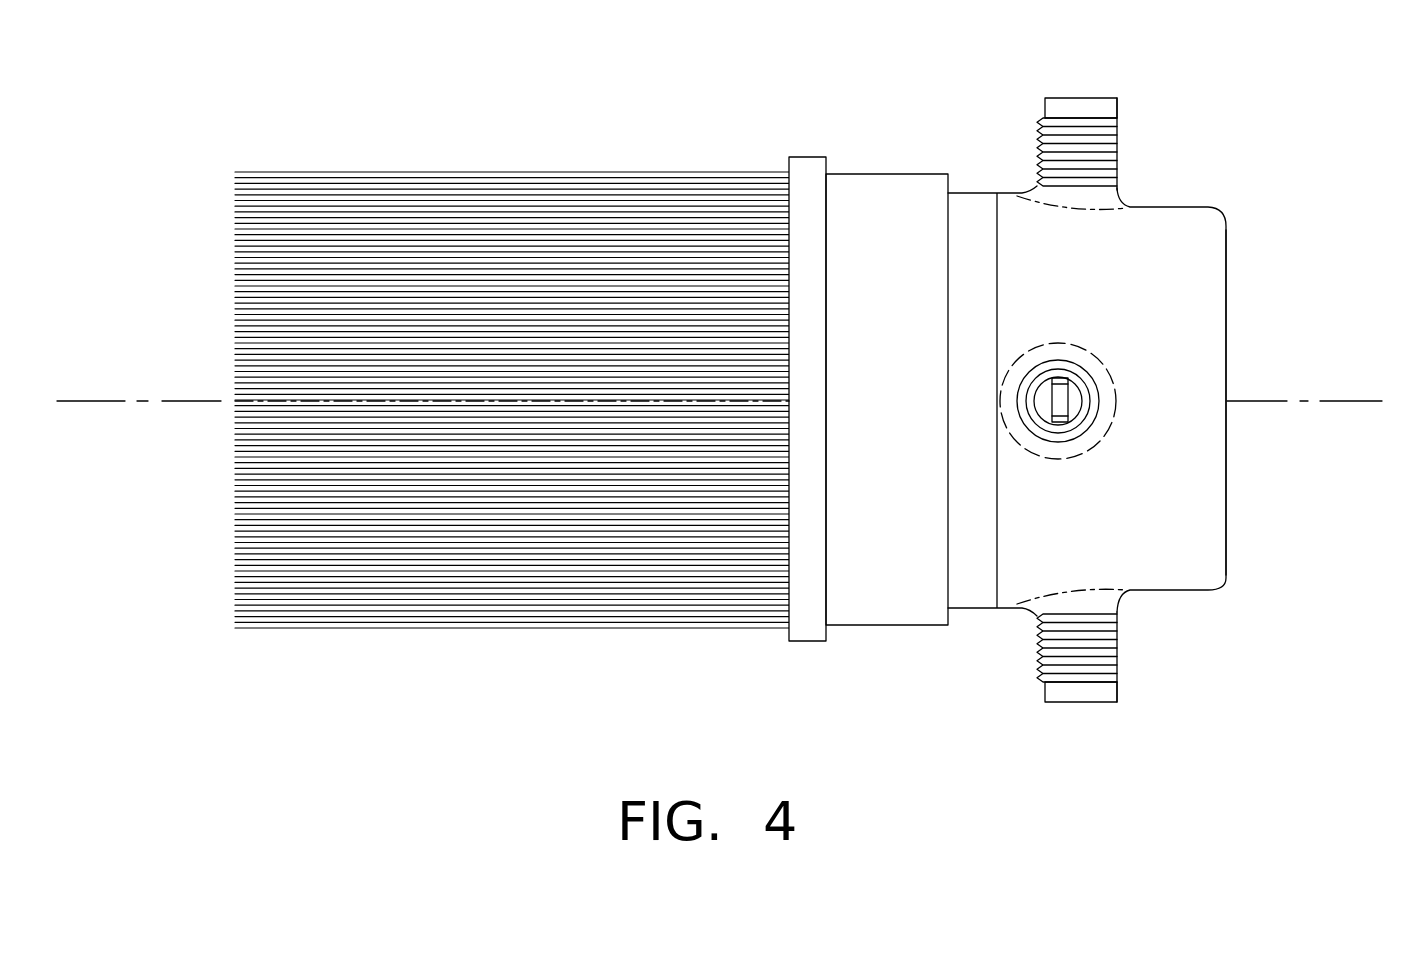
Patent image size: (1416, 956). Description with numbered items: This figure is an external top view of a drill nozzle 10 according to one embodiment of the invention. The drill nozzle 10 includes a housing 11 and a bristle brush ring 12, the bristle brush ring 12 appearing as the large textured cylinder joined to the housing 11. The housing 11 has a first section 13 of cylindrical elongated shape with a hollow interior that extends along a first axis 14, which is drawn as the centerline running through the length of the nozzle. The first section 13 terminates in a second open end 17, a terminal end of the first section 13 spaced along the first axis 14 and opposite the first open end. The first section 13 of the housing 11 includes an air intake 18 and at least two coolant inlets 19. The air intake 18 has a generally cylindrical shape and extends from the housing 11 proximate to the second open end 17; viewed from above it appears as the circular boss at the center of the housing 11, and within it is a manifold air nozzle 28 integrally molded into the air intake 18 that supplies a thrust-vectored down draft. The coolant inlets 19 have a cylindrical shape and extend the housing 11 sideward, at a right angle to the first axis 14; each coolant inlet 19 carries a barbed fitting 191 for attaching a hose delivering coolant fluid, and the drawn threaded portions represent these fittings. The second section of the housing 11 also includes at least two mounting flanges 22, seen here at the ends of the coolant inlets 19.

The drill nozzle 10 is at (838, 718).
The housing 11 is at (1212, 200).
The bristle brush ring 12 is at (858, 165).
The first section 13 is at (1108, 245).
The first axis 14 is at (1302, 400).
The second open end 17 is at (1230, 272).
The air intake 18 is at (1080, 380).
The coolant inlets 19 is at (1070, 130).
The mounting flanges 22 is at (1092, 98).
The manifold air nozzle 28 is at (1072, 405).
The barbed fitting 191 is at (1038, 147).